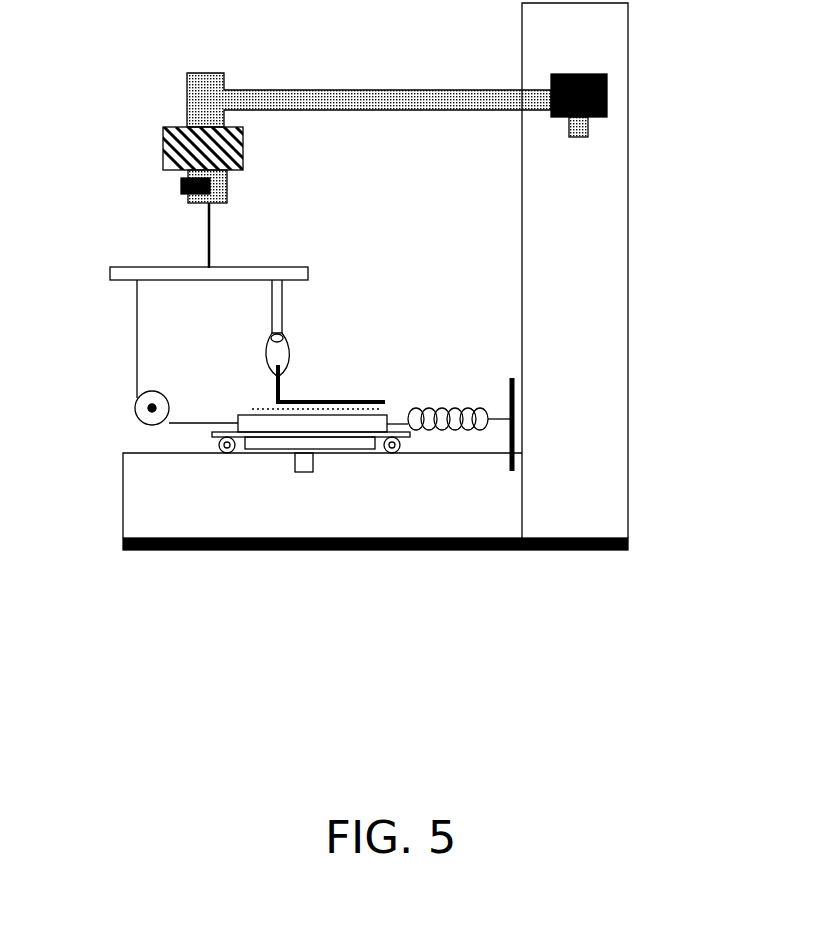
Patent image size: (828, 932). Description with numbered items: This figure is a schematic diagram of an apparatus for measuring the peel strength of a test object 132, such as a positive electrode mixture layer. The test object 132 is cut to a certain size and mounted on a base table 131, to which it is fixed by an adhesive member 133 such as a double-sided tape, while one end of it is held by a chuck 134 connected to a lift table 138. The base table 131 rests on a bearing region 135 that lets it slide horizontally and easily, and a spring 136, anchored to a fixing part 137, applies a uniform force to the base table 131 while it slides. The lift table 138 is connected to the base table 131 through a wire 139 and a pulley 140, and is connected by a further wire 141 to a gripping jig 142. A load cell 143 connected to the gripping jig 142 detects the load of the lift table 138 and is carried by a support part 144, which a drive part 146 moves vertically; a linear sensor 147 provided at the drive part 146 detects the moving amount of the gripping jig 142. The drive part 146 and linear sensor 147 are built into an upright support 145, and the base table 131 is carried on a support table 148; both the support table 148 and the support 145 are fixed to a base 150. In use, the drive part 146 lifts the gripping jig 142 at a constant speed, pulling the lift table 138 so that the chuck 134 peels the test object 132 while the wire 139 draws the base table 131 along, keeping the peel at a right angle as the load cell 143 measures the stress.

The base table 131 is at (305, 428).
The test object 132 is at (303, 400).
The adhesive member 133 is at (250, 405).
The chuck 134 is at (277, 358).
The bearing region 135 is at (223, 453).
The spring 136 is at (443, 400).
The fixing part 137 is at (505, 392).
The lift table 138 is at (112, 282).
The wire 139 is at (137, 353).
The pulley 140 is at (152, 408).
The wire 141 is at (209, 238).
The gripping jig 142 is at (227, 194).
The load cell 143 is at (243, 153).
The support part 144 is at (260, 100).
The support 145 is at (600, 483).
The drive part 146 is at (607, 99).
The linear sensor 147 is at (588, 127).
The support table 148 is at (177, 518).
The base 150 is at (200, 550).